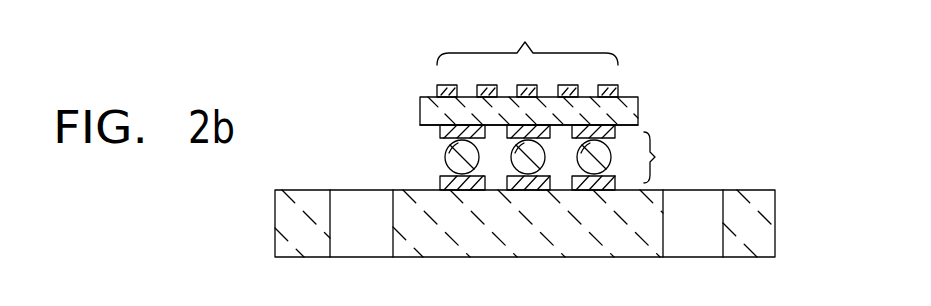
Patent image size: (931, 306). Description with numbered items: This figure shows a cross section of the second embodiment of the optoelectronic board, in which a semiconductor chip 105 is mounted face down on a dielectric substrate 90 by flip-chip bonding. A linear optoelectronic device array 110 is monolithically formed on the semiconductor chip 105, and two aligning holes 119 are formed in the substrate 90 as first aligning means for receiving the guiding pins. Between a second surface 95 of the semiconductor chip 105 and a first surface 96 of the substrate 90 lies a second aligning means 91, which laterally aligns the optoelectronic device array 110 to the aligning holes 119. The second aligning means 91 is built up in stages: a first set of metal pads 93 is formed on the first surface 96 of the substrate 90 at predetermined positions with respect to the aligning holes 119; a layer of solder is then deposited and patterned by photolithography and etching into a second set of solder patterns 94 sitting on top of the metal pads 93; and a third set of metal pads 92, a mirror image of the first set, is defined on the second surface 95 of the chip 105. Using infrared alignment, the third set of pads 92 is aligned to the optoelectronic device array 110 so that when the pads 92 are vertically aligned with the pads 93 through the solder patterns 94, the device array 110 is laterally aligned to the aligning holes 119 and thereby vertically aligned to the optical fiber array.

The dielectric substrate 90 is at (578, 243).
The second aligning means 91 is at (664, 157).
The third set of metal pads 92 is at (440, 133).
The first set of metal pads 93 is at (440, 183).
The second set of solder patterns 94 is at (450, 153).
The second surface of the semiconductor chip 95 is at (627, 130).
The first surface of the substrate 96 is at (733, 191).
The semiconductor chip 105 is at (633, 102).
The linear optoelectronic device array 110 is at (527, 38).
The aligning holes 119 is at (367, 233).